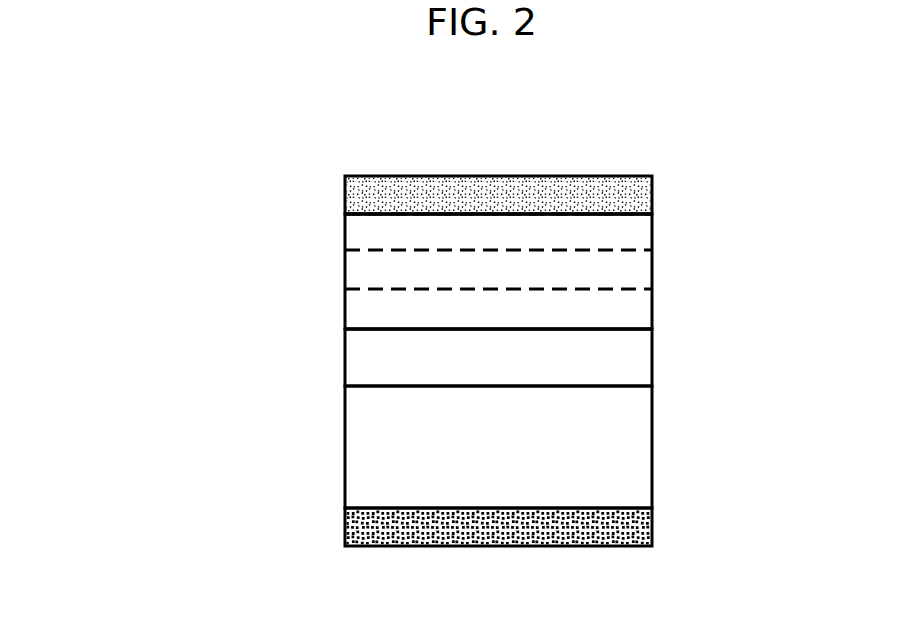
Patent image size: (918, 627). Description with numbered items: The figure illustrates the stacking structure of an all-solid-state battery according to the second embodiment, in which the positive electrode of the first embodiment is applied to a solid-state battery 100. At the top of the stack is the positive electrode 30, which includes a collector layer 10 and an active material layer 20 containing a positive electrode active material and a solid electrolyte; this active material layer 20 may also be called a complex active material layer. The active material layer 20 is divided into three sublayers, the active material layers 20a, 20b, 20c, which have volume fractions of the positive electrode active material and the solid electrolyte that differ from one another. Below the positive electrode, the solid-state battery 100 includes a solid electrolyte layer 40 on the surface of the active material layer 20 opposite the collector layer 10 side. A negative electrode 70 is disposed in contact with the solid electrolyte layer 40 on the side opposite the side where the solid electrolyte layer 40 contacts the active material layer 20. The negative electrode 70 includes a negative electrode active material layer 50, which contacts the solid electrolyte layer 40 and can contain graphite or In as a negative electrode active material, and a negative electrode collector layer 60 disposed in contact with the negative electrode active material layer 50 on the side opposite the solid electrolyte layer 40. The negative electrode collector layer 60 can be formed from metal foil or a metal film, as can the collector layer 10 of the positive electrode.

The solid-state battery 100 is at (127, 128).
The collector layer 10 is at (345, 202).
The active material layer 20 is at (345, 272).
The active material layer 20a is at (653, 230).
The active material layer 20b is at (653, 271).
The active material layer 20c is at (653, 313).
The positive electrode 30 is at (232, 196).
The solid electrolyte layer 40 is at (345, 354).
The negative electrode active material layer 50 is at (345, 446).
The negative electrode collector layer 60 is at (345, 528).
The negative electrode 70 is at (240, 408).